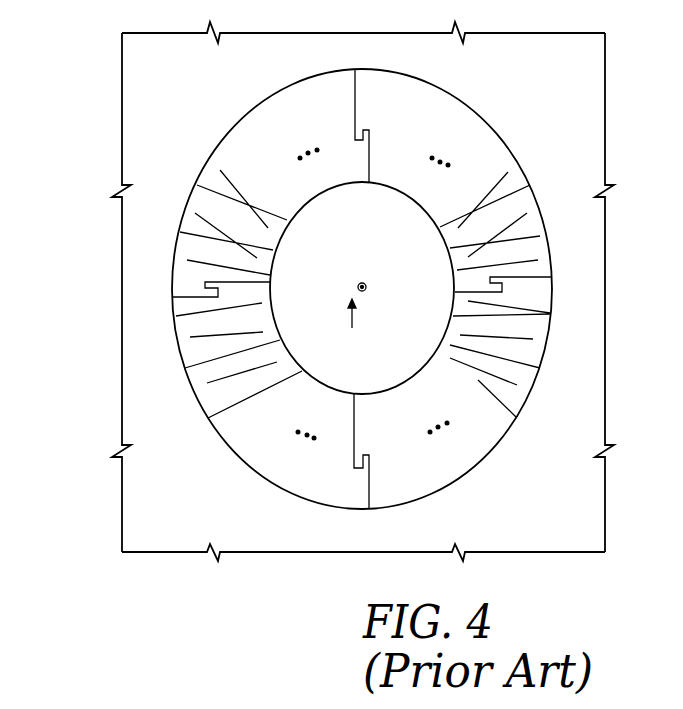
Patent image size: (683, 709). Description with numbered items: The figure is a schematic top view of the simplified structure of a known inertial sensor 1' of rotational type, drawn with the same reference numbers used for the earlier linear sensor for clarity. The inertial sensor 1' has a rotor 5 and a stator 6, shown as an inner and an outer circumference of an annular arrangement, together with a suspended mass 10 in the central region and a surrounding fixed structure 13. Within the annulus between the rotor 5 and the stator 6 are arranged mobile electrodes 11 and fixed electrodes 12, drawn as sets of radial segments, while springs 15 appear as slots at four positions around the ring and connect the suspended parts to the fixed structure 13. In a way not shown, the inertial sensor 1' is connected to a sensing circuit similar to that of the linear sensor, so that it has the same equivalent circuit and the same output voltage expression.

The inertial sensor 1' is at (331, 291).
The rotor 5 is at (406, 355).
The stator 6 is at (545, 361).
The suspended mass 10 is at (297, 213).
The mobile electrodes 11 is at (223, 330).
The fixed electrodes 12 is at (502, 207).
The fixed structure 13 is at (330, 289).
The springs 15 is at (356, 123).